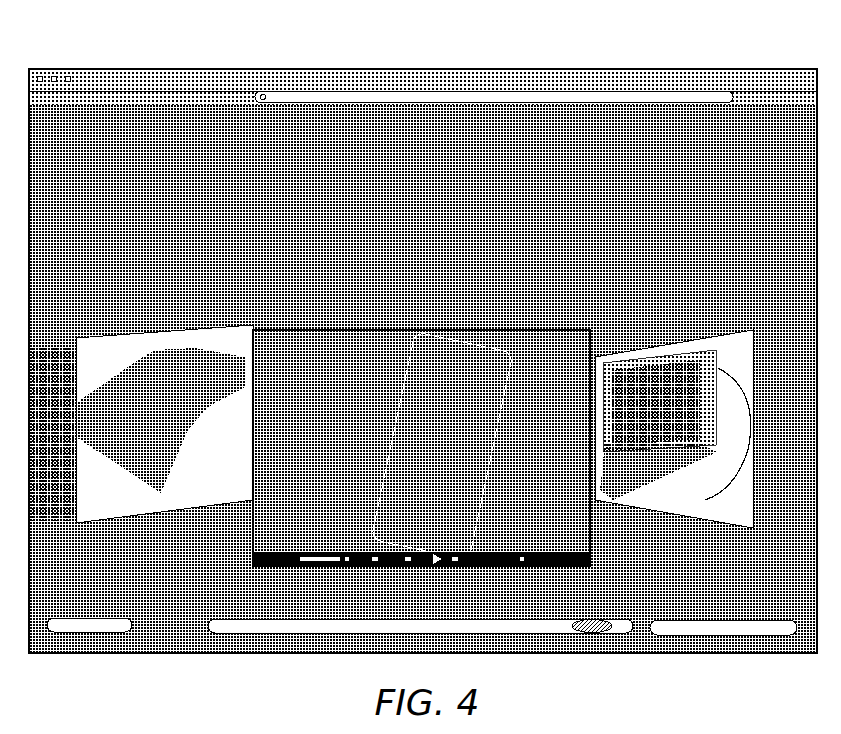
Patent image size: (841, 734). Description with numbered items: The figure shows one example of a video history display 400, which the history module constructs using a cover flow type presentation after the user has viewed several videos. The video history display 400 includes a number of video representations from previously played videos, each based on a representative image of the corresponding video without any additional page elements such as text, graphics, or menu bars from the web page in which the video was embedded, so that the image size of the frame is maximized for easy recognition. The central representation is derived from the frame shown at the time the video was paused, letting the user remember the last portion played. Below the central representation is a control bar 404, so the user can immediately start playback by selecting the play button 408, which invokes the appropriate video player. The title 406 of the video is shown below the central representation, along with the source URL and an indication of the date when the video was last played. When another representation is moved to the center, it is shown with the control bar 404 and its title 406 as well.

The video history display 400 is at (592, 68).
The control bar 404 is at (520, 565).
The title 406 is at (305, 594).
The play button 408 is at (400, 560).